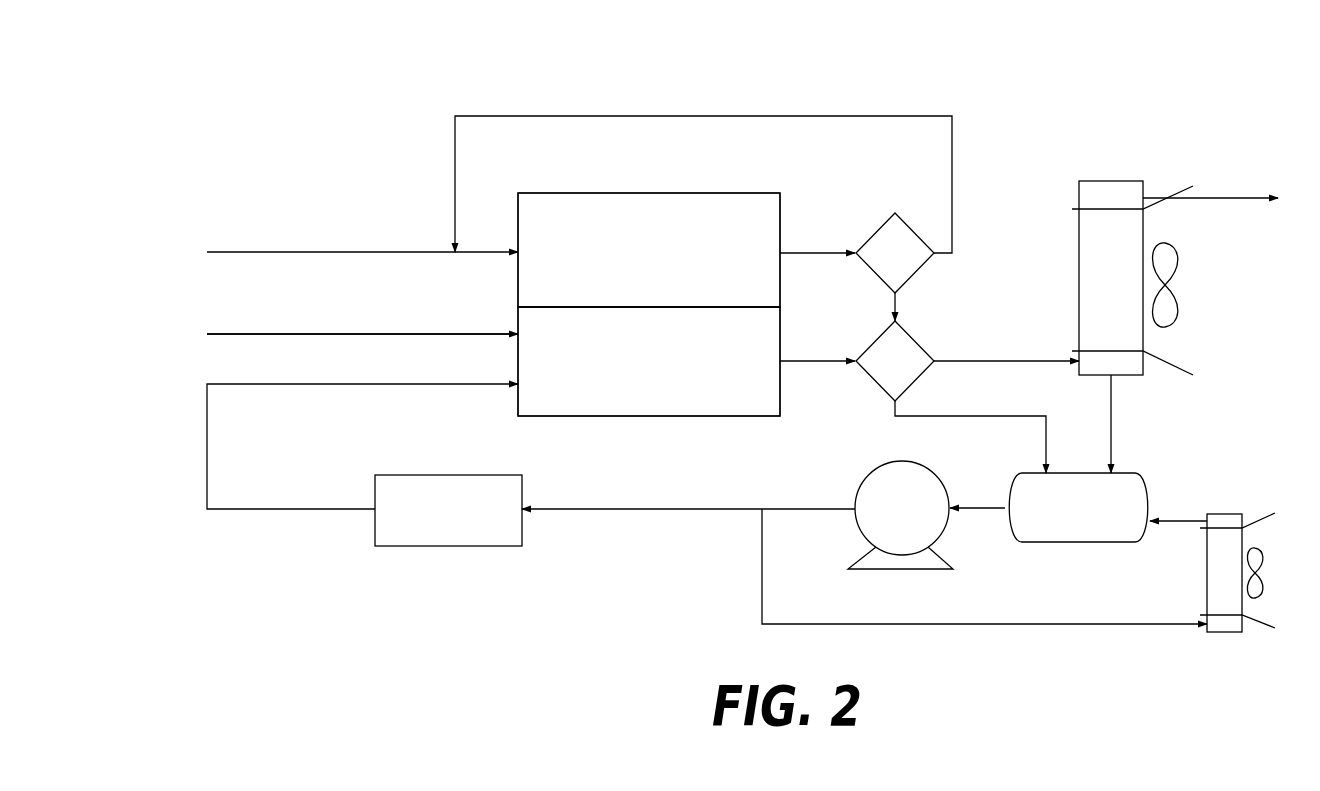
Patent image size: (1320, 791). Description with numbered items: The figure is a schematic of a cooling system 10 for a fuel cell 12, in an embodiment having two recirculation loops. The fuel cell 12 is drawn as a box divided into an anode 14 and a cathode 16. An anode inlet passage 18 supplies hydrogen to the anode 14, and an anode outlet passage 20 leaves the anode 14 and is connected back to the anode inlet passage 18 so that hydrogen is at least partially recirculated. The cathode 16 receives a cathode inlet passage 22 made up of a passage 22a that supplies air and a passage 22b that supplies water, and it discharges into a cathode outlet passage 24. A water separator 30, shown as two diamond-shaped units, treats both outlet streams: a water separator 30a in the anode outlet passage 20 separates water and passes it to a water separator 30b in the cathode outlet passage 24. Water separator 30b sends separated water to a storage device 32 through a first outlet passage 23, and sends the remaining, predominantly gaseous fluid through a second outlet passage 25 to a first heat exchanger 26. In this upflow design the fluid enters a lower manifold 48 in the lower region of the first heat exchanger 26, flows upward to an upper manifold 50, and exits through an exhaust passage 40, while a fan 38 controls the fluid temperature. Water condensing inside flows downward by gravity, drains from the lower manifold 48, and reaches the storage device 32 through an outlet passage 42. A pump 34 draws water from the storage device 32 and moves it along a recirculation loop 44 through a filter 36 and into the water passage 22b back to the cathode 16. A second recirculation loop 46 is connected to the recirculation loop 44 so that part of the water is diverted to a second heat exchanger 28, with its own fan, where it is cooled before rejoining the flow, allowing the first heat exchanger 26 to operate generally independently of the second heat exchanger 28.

The cooling system 10 is at (296, 134).
The fuel cell 12 is at (797, 177).
The anode 14 is at (643, 266).
The cathode 16 is at (643, 374).
The anode inlet passage 18 is at (383, 250).
The anode outlet passage 20 is at (822, 253).
The cathode inlet passage 22 is at (358, 455).
The air supply passage 22a is at (371, 334).
The water supply passage 22b is at (392, 384).
The first outlet passage 23 is at (1001, 416).
The cathode outlet passage 24 is at (820, 362).
The second outlet passage 25 is at (989, 362).
The first heat exchanger 26 is at (1097, 291).
The second heat exchanger 28 is at (1284, 615).
The water separator 30 is at (940, 293).
The water separator 30a is at (873, 266).
The water separator 30b is at (873, 374).
The storage device 32 is at (1064, 518).
The pump 34 is at (888, 518).
The filter 36 is at (434, 523).
The fan 38 is at (1195, 260).
The exhaust passage 40 is at (1210, 186).
The outlet passage 42 is at (1112, 429).
The recirculation loop 44 is at (677, 456).
The second recirculation loop 46 is at (1063, 580).
The lower manifold 48 is at (1078, 352).
The upper manifold 50 is at (1084, 197).